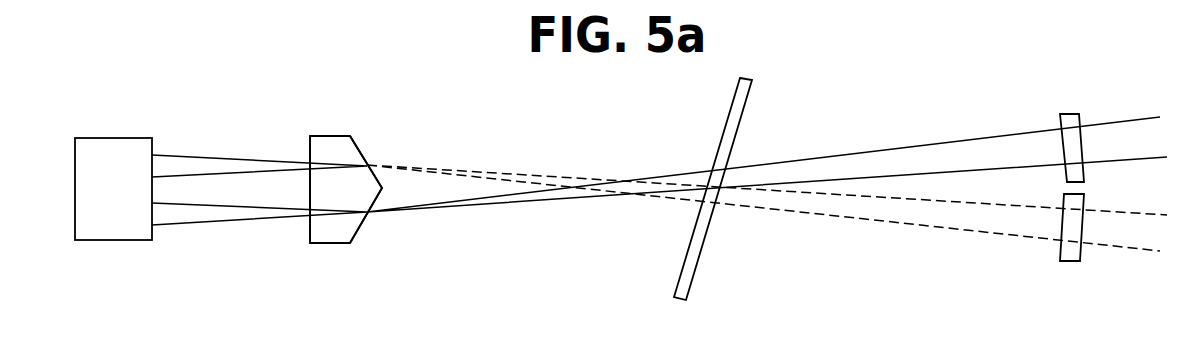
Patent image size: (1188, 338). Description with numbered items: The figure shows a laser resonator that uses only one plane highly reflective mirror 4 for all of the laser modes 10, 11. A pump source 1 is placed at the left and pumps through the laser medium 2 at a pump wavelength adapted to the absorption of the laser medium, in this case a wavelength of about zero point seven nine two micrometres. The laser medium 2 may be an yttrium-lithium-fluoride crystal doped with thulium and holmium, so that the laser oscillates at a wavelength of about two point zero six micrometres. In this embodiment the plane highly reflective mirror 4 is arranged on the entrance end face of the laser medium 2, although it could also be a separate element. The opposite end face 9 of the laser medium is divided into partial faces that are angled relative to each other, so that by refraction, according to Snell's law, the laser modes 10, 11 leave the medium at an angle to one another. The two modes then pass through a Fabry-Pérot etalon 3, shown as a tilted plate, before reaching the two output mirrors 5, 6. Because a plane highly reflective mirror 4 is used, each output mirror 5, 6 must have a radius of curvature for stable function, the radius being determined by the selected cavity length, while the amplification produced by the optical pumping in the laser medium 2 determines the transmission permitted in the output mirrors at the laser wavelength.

The pump source 1 is at (113, 138).
The laser medium 2 is at (330, 142).
The Fabry-Pérot etalon 3 is at (733, 103).
The plane highly reflective mirror 4 is at (309, 146).
The output mirror 5 is at (1079, 114).
The output mirror 6 is at (1080, 258).
The end face 9 is at (356, 147).
The laser mode 10 is at (950, 148).
The laser mode 11 is at (950, 223).